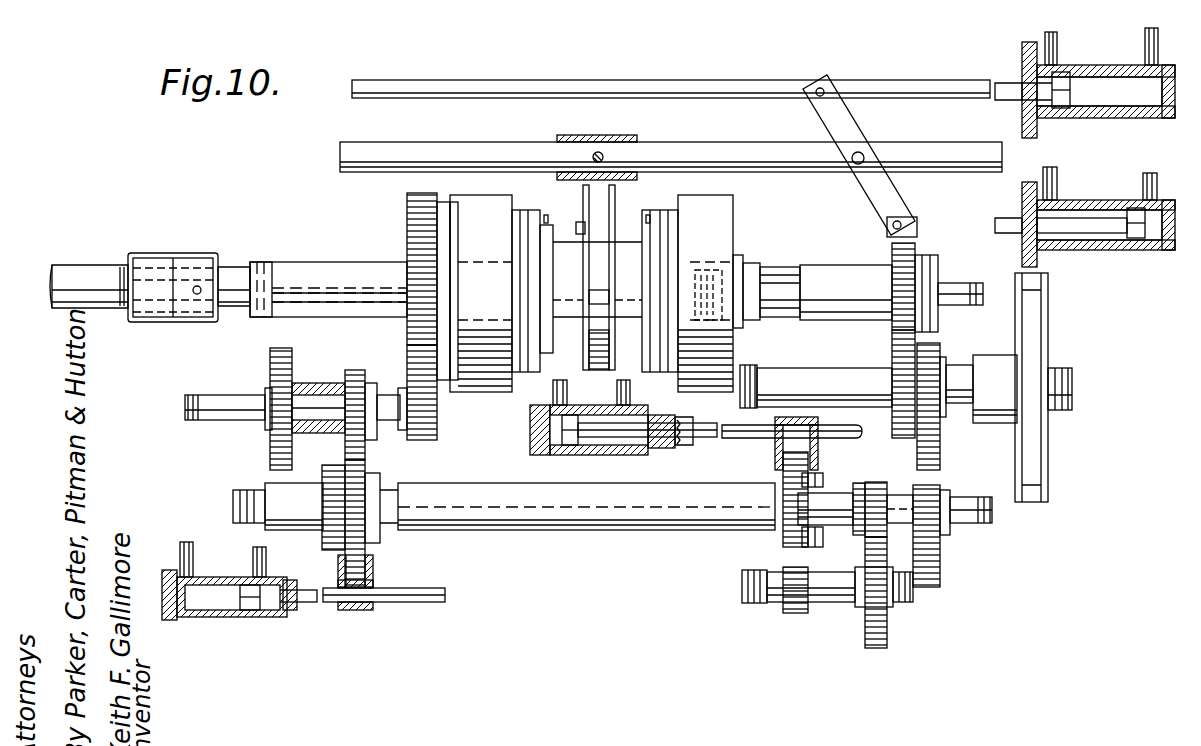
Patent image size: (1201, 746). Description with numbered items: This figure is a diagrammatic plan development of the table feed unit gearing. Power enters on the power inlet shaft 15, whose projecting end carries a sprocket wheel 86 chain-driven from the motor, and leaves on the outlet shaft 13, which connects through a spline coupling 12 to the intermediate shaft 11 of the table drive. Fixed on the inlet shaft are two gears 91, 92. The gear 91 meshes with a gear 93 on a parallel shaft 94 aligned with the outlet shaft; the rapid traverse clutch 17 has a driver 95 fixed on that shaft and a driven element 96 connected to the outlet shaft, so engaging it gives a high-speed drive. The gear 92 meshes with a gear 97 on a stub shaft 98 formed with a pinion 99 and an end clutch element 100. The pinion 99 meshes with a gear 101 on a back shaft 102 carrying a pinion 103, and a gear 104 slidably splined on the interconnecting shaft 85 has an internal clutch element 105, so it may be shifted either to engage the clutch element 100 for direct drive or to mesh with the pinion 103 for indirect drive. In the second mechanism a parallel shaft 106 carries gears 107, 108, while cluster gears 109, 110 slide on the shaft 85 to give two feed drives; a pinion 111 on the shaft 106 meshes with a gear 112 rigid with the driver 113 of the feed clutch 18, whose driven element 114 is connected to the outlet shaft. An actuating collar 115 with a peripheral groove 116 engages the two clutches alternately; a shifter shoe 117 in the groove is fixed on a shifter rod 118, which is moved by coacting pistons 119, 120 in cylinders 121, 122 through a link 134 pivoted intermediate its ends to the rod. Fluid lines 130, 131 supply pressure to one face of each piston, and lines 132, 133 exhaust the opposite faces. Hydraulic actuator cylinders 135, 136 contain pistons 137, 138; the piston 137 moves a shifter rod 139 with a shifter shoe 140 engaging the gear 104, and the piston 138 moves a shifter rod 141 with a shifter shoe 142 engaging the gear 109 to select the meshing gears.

The intermediate shaft 11 is at (93, 272).
The spline coupling 12 is at (175, 256).
The outlet shaft 13 is at (297, 268).
The power inlet shaft 15 is at (800, 372).
The rapid traverse clutch 17 is at (750, 236).
The feed clutch 18 is at (500, 400).
The shaft 85 is at (600, 531).
The sprocket wheel 86 is at (1040, 338).
The gear 91 is at (892, 348).
The gear 92 is at (935, 345).
The gear 93 is at (916, 249).
The parallel shaft 94 is at (838, 272).
The driver 95 is at (735, 206).
The driven element 96 is at (655, 215).
The gear 97 is at (941, 565).
The stub shaft 98 is at (975, 524).
The pinion 99 is at (875, 483).
The end clutch element 100 is at (857, 484).
The gear 101 is at (888, 624).
The back shaft 102 is at (840, 604).
The pinion 103 is at (793, 612).
The gear 104 is at (790, 540).
The internal clutch element 105 is at (822, 535).
The parallel shaft 106 is at (247, 393).
The gear 107 is at (352, 372).
The gear 108 is at (293, 352).
The gear 109 is at (366, 461).
The gear 110 is at (322, 542).
The pinion 111 is at (437, 440).
The gear 112 is at (405, 210).
The driver 113 is at (482, 274).
The driven element 114 is at (527, 218).
The actuating collar 115 is at (583, 224).
The peripheral groove 116 is at (599, 362).
The shifter shoe 117 is at (599, 137).
The shifter rod 118 is at (744, 152).
The piston 119 is at (1060, 80).
The piston 120 is at (1138, 220).
The cylinder 121 is at (1117, 65).
The cylinder 122 is at (1078, 200).
The fluid line 130 is at (1045, 38).
The fluid line 131 is at (1046, 172).
The fluid line 132 is at (1158, 48).
The fluid line 133 is at (1150, 175).
The link 134 is at (873, 133).
The hydraulic actuator cylinder 135 is at (614, 452).
The hydraulic actuator cylinder 136 is at (216, 620).
The piston 137 is at (569, 446).
The piston 138 is at (247, 585).
The shifter rod 139 is at (735, 439).
The shifter shoe 140 is at (820, 453).
The shifter rod 141 is at (418, 603).
The shifter shoe 142 is at (374, 578).